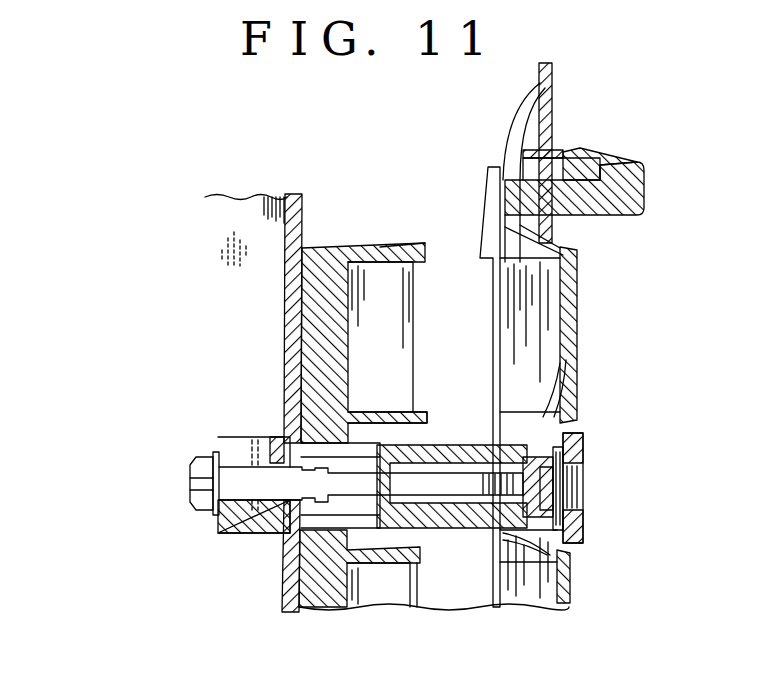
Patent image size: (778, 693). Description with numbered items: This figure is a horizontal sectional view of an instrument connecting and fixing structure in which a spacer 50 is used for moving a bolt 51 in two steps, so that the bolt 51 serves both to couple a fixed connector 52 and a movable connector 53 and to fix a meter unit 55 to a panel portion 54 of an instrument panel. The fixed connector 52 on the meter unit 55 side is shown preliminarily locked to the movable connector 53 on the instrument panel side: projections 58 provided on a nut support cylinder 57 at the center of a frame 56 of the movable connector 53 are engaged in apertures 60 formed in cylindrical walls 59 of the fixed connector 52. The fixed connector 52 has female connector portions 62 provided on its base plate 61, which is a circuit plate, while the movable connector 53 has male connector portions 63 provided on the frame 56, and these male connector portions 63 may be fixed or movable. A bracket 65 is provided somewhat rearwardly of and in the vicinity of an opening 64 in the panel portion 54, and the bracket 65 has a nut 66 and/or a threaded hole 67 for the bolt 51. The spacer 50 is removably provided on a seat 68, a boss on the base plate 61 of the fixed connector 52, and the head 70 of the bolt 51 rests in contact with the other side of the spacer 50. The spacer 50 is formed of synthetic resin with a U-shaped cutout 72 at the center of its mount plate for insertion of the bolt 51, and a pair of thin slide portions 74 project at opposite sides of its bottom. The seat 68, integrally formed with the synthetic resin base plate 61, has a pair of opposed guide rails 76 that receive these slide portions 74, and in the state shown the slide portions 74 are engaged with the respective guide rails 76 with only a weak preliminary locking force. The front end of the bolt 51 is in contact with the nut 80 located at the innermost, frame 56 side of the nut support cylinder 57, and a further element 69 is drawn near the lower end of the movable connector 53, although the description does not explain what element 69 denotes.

The spacer 50 is at (240, 536).
The bolt 51 is at (355, 500).
The fixed connector 52 is at (337, 246).
The movable connector 53 is at (462, 255).
The panel portion 54 is at (552, 115).
The meter unit 55 is at (240, 195).
The frame 56 is at (557, 240).
The nut support cylinder 57 is at (455, 430).
The projections 58 is at (337, 380).
The cylindrical walls 59 is at (410, 430).
The apertures 60 is at (347, 437).
The base plate 61 is at (302, 198).
The female connector portions 62 is at (389, 242).
The male connector portions 63 is at (440, 250).
The opening 64 is at (557, 230).
The bracket 65 is at (585, 443).
The nut 66 is at (588, 467).
The threaded hole 67 is at (587, 492).
The seat 68 is at (275, 435).
The ring 69 is at (503, 542).
The head 70 is at (190, 485).
The U-shaped cutout 72 is at (223, 453).
The slide portions 74 is at (257, 445).
The guide rails 76 is at (230, 455).
The nut 80 is at (543, 417).